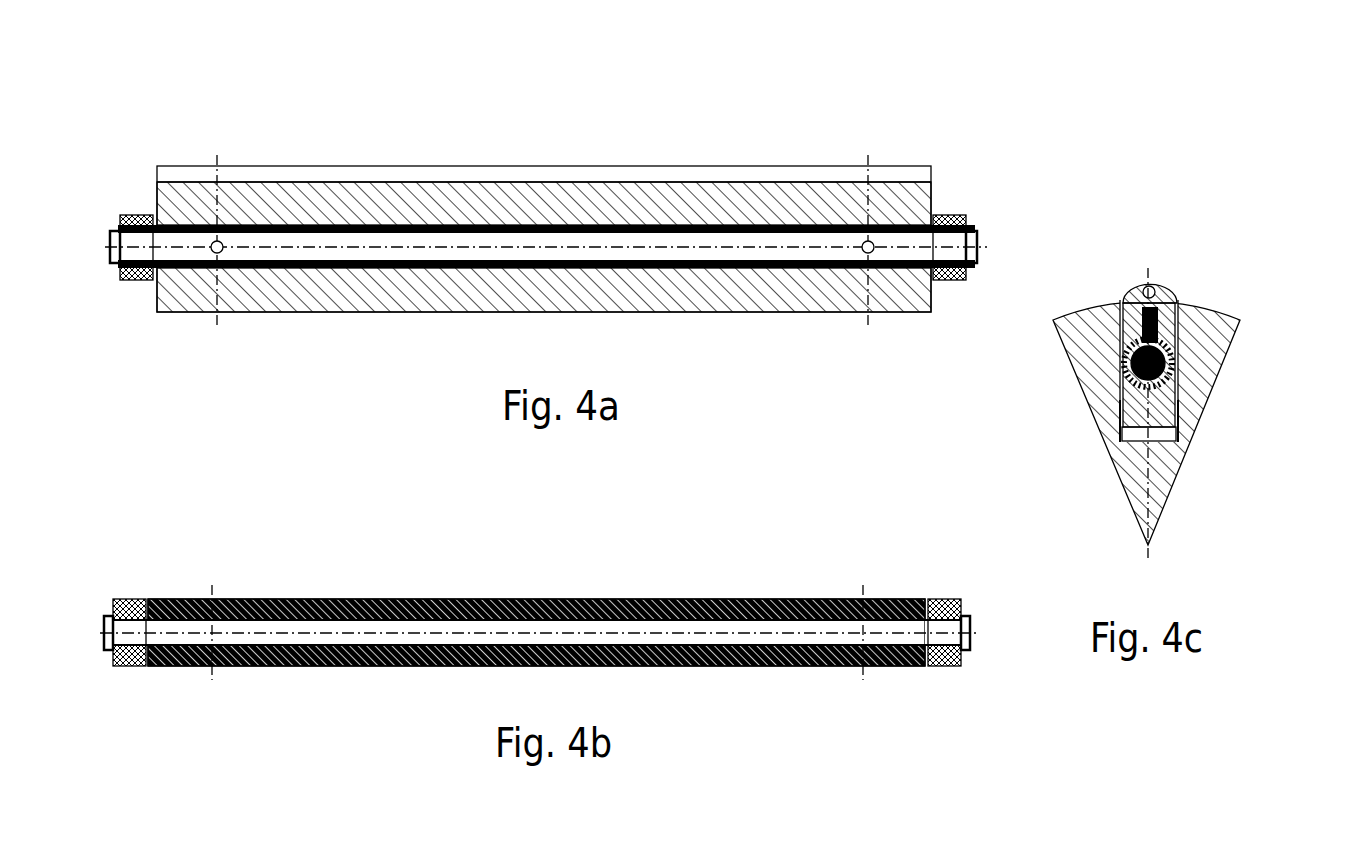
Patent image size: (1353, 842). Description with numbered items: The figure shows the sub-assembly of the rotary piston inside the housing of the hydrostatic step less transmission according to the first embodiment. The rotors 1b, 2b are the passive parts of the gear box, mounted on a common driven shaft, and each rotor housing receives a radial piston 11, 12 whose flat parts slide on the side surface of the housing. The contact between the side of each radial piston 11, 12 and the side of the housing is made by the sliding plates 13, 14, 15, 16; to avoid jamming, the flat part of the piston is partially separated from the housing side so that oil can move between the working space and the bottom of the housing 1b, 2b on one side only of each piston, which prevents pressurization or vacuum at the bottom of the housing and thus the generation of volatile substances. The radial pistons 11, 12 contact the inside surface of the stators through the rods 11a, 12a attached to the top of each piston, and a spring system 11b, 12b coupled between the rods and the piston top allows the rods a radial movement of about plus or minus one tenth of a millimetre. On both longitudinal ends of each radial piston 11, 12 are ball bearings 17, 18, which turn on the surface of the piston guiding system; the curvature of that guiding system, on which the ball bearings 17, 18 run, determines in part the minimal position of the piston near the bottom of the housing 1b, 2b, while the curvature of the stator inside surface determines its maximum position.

In FIG. 4A, the rotor 1b is at (544, 176).
In FIG. 4A, the rotor 2b is at (507, 207).
In FIG. 4A, the radial piston 11 is at (546, 182).
In FIG. 4C, the radial piston 11 is at (1054, 301).
In FIG. 4A, the radial piston 12 is at (287, 173).
In FIG. 4C, the radial piston 12 is at (1137, 295).
In FIG. 4C, the rod 11a is at (1054, 301).
In FIG. 4C, the rod 12a is at (1153, 288).
In FIG. 4C, the spring system 11b is at (980, 301).
In FIG. 4C, the spring system 12b is at (1133, 295).
In FIG. 4C, the sliding plate 13 is at (1061, 422).
In FIG. 4C, the sliding plate 14 is at (1085, 360).
In FIG. 4C, the sliding plate 15 is at (1210, 491).
In FIG. 4C, the sliding plate 16 is at (1178, 440).
In FIG. 4B, the ball bearing 17 is at (539, 572).
In FIG. 4C, the ball bearing 17 is at (1029, 467).
In FIG. 4B, the ball bearing 18 is at (125, 598).
In FIG. 4C, the ball bearing 18 is at (1118, 418).